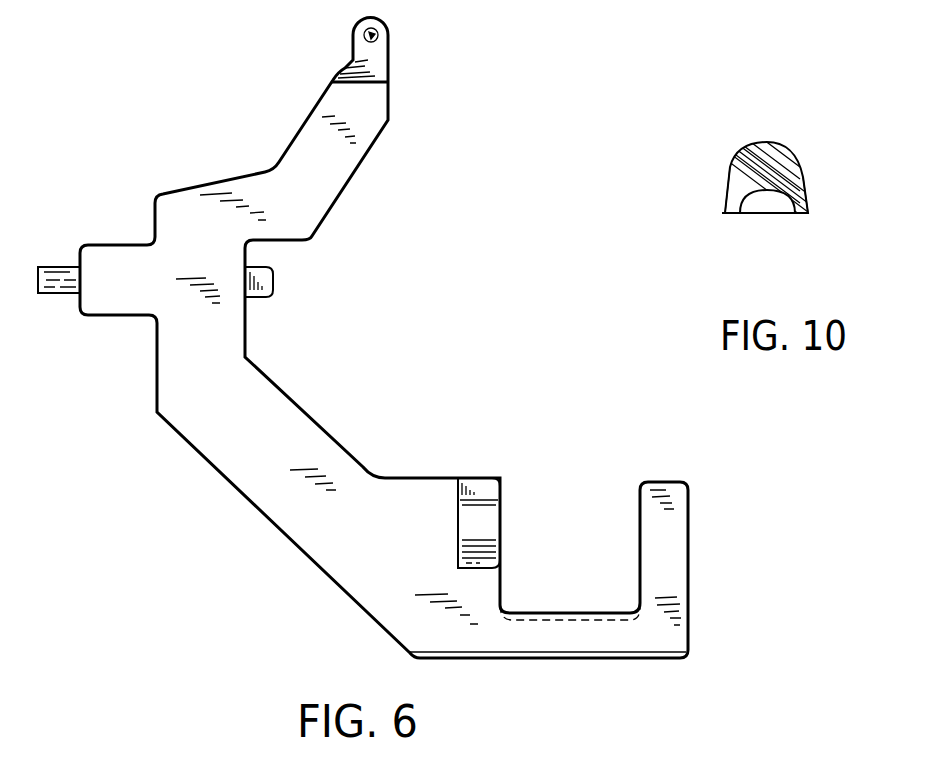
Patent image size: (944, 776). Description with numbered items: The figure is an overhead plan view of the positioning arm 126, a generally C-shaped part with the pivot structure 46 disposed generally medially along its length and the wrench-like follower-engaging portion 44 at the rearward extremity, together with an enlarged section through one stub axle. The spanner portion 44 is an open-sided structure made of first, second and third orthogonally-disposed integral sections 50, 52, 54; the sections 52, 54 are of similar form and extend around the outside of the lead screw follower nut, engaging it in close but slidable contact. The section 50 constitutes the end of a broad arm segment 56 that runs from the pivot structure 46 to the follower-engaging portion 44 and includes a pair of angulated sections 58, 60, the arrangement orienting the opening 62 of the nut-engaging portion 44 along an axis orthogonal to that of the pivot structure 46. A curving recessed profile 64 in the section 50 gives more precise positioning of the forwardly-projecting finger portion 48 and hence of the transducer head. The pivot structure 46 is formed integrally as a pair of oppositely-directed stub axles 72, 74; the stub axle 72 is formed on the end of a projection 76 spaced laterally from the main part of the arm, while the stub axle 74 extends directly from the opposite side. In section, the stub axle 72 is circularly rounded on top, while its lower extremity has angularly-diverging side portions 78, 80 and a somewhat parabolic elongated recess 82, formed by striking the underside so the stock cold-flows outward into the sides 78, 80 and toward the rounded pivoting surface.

In FIG. 6, the follower-engaging portion 44 is at (380, 597).
In FIG. 6, the pivot structure 46 is at (137, 263).
In FIG. 6, the forwardly-projecting finger portion 48 is at (288, 140).
In FIG. 6, the first section 50 is at (443, 594).
In FIG. 6, the second section 52 is at (237, 330).
In FIG. 6, the third section 54 is at (662, 522).
In FIG. 6, the broad arm segment 56 is at (212, 411).
In FIG. 6, the angulated section 58 is at (173, 400).
In FIG. 6, the angulated section 60 is at (374, 487).
In FIG. 6, the opening 62 is at (597, 497).
In FIG. 6, the curving recessed profile 64 is at (484, 521).
In FIG. 6, the stub axle 72 is at (60, 263).
In FIG. 10, the stub axle 72 is at (788, 148).
In FIG. 6, the stub axle 74 is at (274, 280).
In FIG. 6, the projection 76 is at (122, 300).
In FIG. 10, the angularly-diverging side portion 78 is at (807, 191).
In FIG. 10, the angularly-diverging side portion 80 is at (727, 186).
In FIG. 10, the recess 82 is at (765, 202).
In FIG. 6, the positioning arm 126 is at (138, 199).